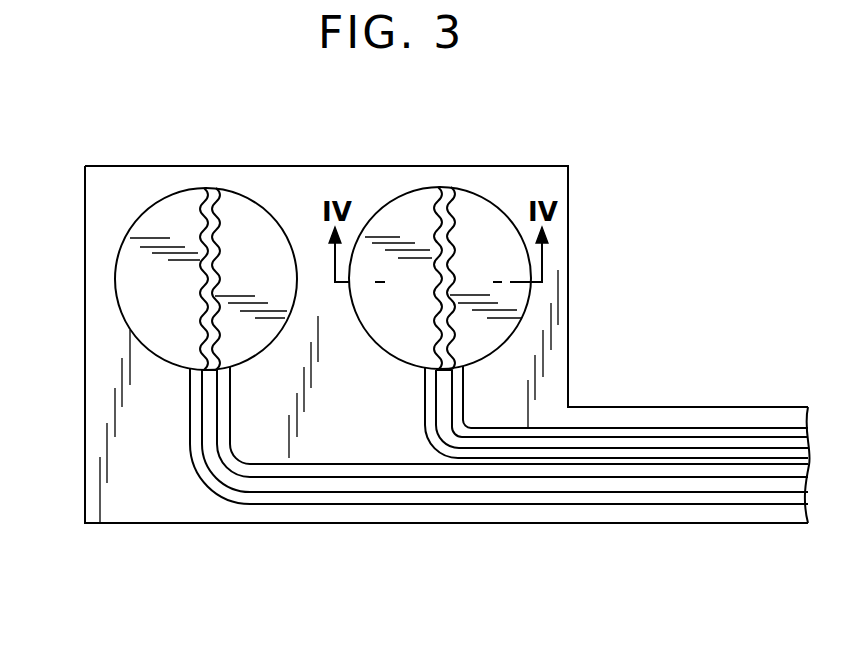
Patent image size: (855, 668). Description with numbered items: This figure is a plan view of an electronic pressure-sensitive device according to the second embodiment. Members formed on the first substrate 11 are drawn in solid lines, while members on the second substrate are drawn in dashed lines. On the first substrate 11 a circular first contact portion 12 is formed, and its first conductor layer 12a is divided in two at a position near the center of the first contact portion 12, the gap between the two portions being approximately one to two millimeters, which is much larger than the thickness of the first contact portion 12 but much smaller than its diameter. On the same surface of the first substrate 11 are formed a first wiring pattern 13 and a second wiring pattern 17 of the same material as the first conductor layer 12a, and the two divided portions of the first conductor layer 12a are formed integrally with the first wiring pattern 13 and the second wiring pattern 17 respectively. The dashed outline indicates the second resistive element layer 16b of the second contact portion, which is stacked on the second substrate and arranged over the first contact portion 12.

The first substrate 11 is at (107, 212).
The first contact portion 12 is at (209, 188).
The first conductor layer 12a is at (237, 321).
The first wiring pattern 13 is at (223, 427).
The second resistive element layer 16b is at (233, 242).
The second wiring pattern 17 is at (200, 452).